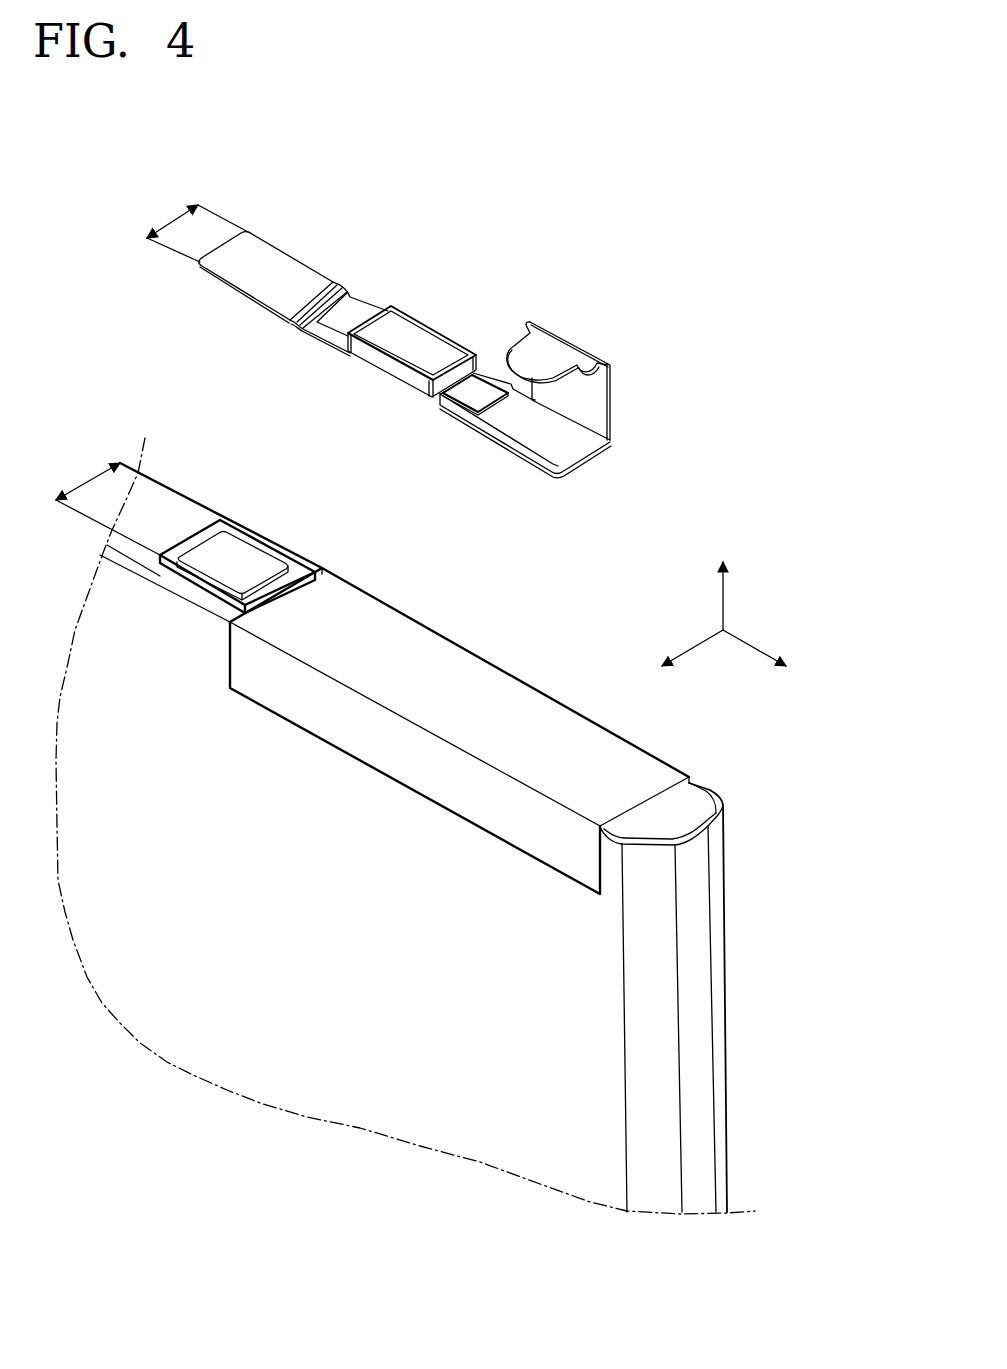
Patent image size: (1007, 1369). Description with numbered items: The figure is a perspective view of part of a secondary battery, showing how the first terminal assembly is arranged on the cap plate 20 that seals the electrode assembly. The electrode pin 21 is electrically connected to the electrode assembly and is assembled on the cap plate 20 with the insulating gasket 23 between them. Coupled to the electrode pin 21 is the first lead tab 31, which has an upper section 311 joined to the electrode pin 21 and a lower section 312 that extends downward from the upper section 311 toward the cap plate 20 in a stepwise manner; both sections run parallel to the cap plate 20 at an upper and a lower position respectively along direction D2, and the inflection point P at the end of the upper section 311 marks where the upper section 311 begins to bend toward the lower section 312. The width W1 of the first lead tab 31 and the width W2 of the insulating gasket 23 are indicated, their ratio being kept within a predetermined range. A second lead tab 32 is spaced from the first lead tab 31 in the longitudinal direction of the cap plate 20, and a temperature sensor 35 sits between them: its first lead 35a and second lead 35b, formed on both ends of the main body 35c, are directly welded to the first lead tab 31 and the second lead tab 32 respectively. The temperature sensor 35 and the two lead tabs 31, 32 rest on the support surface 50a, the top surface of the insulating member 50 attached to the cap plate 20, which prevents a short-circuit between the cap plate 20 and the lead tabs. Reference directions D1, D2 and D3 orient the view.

The cap plate 20 is at (181, 490).
The electrode pin 21 is at (250, 557).
The insulating gasket 23 is at (169, 565).
The first lead tab 31 is at (293, 315).
The upper section 311 is at (250, 283).
The lower section 312 is at (311, 355).
The inflection point P is at (323, 297).
The second lead tab 32 is at (590, 336).
The temperature sensor 35 is at (418, 312).
The first lead 35a is at (353, 318).
The second lead 35b is at (481, 347).
The main body 35c is at (418, 338).
The insulating member 50 is at (459, 726).
The support surface 50a is at (418, 645).
The width of the first lead tab W1 is at (195, 228).
The width of the insulating gasket W2 is at (88, 477).
The first direction D1 is at (774, 660).
The second direction D2 is at (720, 581).
The third direction D3 is at (675, 659).